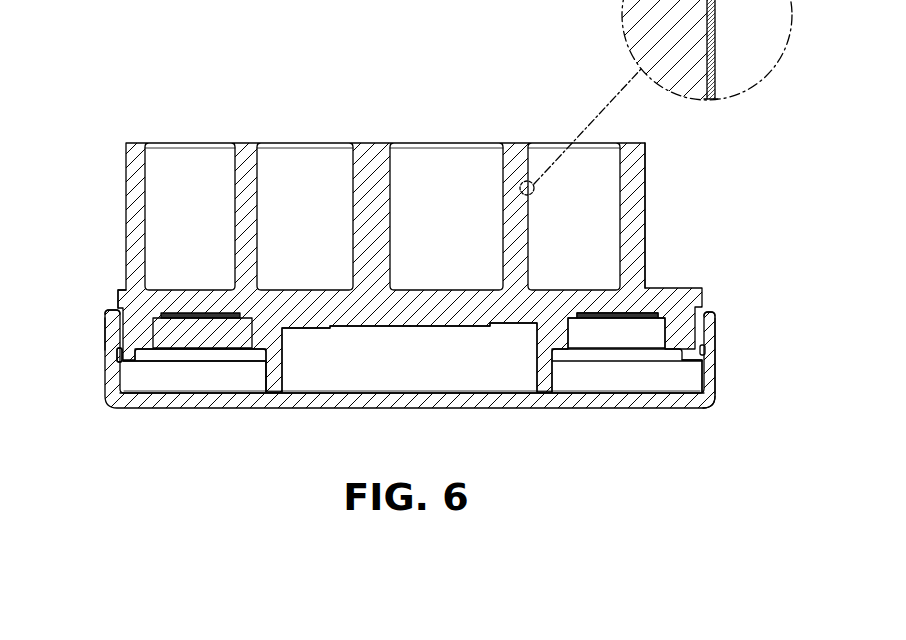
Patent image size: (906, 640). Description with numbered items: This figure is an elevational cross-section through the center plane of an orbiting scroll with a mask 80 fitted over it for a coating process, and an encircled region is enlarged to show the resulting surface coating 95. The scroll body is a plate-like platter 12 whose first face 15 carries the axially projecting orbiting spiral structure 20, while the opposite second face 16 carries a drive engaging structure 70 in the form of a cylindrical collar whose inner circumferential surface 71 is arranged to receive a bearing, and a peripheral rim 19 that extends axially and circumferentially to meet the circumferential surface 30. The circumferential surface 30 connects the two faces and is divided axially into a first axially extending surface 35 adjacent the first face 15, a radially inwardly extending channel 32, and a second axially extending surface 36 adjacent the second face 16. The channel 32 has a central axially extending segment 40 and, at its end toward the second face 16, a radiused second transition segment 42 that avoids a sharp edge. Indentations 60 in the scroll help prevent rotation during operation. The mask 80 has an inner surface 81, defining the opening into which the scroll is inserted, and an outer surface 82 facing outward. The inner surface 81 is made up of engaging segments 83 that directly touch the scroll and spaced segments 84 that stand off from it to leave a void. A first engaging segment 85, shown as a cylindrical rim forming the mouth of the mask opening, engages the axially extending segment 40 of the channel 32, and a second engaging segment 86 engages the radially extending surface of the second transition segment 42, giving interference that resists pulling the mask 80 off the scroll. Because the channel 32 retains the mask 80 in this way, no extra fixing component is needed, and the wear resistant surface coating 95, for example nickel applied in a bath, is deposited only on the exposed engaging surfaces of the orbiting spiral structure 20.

The platter 12 is at (676, 301).
The first face 15 is at (655, 288).
The second face 16 is at (710, 395).
The rim 19 is at (133, 365).
The orbiting spiral structure 20 is at (372, 150).
The circumferential surface 30 is at (708, 350).
The channel 32 is at (712, 318).
The first axially extending surface 35 is at (119, 297).
The second axially extending surface 36 is at (118, 356).
The axially extending segment 40 is at (110, 312).
The second transition segment 42 is at (108, 334).
The indentations 60 is at (212, 332).
The drive engaging structure 70 is at (280, 385).
The inner circumferential surface 71 is at (532, 382).
The mask 80 is at (308, 397).
The inner surface 81 is at (700, 386).
The outer surface 82 is at (713, 372).
The engaging segment 83 is at (125, 325).
The spaced segment 84 is at (592, 392).
The first engaging segment 85 is at (125, 325).
The second engaging segment 86 is at (120, 362).
The surface coating 95 is at (710, 13).